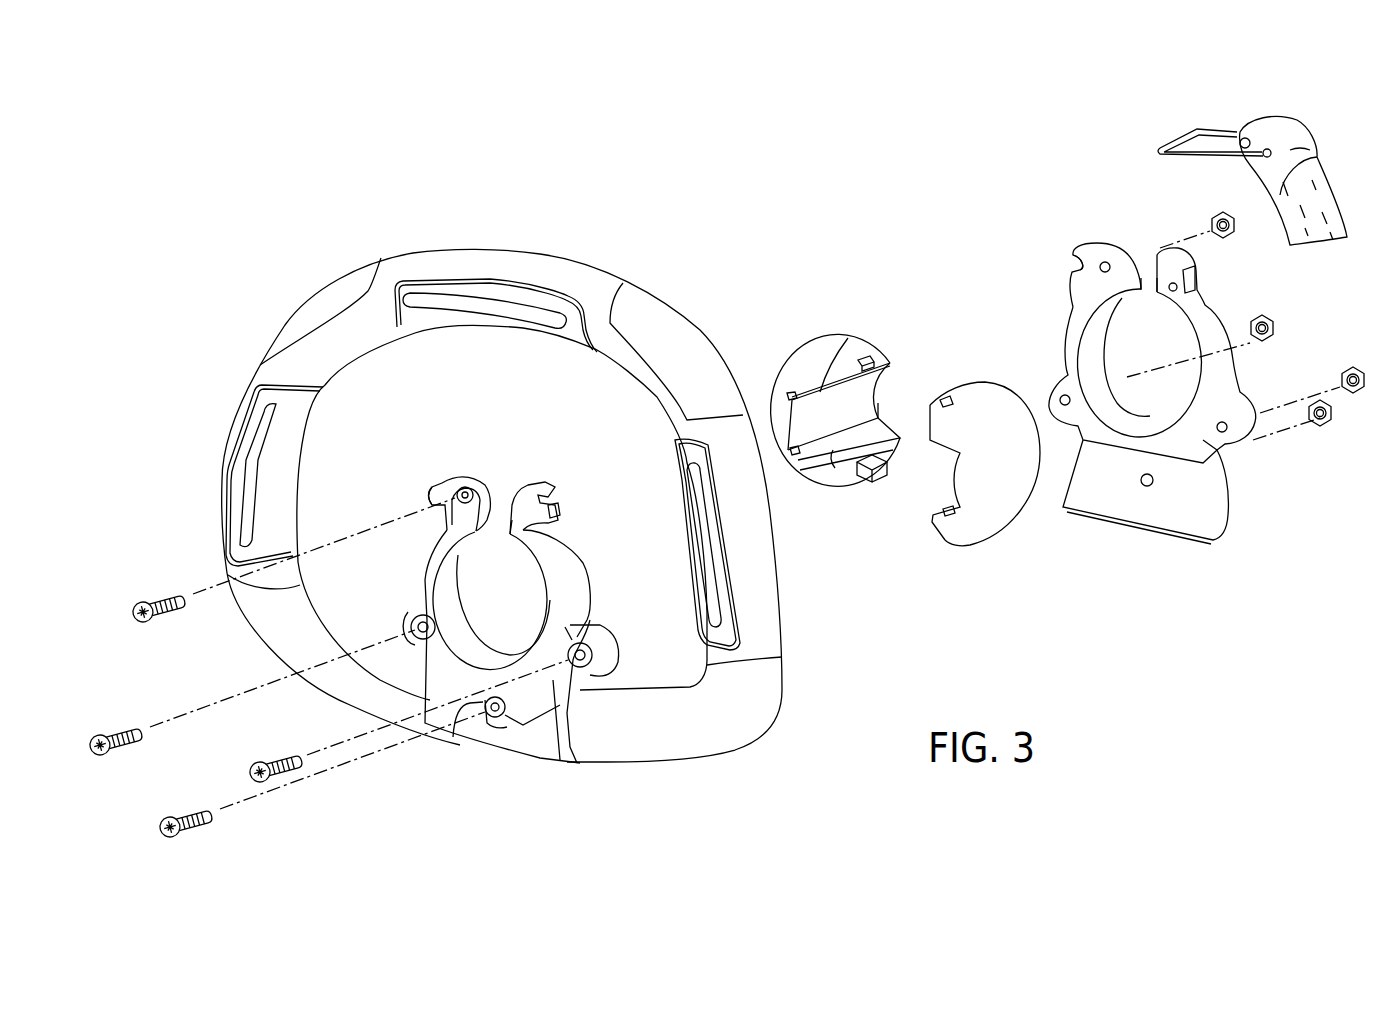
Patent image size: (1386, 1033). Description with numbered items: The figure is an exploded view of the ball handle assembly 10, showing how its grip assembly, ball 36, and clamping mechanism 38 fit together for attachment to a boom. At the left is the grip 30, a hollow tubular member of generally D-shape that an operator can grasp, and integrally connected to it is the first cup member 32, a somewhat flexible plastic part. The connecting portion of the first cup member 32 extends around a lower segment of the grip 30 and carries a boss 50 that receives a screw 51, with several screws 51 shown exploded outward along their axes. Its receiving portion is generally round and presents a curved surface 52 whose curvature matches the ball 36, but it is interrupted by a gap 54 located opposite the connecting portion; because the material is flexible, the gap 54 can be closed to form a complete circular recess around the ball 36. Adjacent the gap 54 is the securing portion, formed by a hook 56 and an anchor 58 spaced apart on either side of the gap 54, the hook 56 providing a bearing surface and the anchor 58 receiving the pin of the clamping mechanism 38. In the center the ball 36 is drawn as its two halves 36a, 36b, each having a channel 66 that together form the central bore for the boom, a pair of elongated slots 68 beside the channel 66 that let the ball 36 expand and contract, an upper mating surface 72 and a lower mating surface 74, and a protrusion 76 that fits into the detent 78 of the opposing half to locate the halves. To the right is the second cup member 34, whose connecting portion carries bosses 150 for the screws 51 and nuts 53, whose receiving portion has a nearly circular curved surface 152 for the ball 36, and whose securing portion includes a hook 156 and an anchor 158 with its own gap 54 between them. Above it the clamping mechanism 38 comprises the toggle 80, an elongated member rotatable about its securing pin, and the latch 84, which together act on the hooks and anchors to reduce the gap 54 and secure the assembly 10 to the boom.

The ball handle assembly 10 is at (205, 213).
The grip 30 is at (440, 265).
The first cup member 32 is at (575, 560).
The second cup member 34 is at (1274, 518).
The ball 36 is at (939, 333).
The first half of ball 36a is at (815, 355).
The second half of ball 36b is at (995, 507).
The clamping mechanism 38 is at (1283, 93).
The boss 50 is at (462, 487).
The screw 51 is at (140, 603).
The curved surface 52 is at (447, 588).
The nut 53 is at (1220, 212).
The gap 54 is at (500, 524).
The hook 56 is at (438, 492).
The anchor 58 is at (545, 484).
The channel 66 is at (850, 393).
The elongated slots 68 is at (790, 396).
The upper mating surface 72 is at (840, 355).
The lower mating surface 74 is at (838, 470).
The protrusion 76 is at (880, 472).
The detent 78 is at (876, 355).
The toggle 80 is at (1300, 135).
The latch 84 is at (1213, 128).
The boss 150 is at (1100, 272).
The curved surface 152 is at (1127, 403).
The hook 156 is at (1075, 255).
The anchor 158 is at (1200, 262).